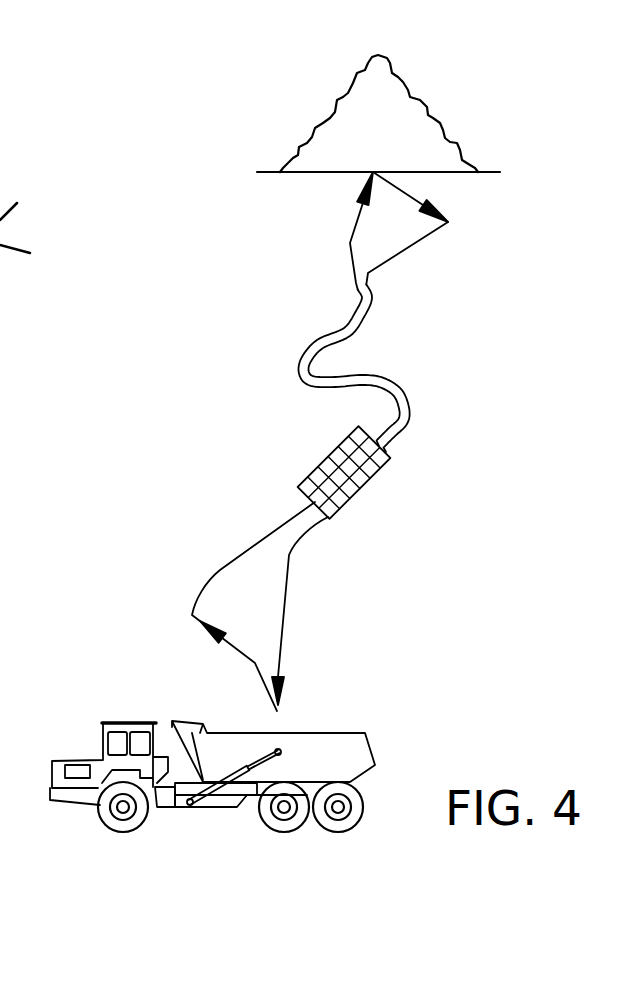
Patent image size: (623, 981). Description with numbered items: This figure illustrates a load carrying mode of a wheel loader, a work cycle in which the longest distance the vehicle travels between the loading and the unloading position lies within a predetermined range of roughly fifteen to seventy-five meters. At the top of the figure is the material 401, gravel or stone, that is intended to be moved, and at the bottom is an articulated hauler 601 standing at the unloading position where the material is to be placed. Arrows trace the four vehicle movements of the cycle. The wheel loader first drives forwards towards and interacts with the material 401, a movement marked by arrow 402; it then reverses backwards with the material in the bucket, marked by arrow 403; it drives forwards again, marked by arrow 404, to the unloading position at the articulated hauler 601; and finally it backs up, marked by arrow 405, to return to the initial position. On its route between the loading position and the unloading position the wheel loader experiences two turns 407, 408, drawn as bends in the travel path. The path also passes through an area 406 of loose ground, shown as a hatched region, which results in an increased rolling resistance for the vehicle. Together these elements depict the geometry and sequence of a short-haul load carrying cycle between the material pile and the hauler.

The material 401 is at (412, 110).
The forward movement towards the material 402 is at (356, 293).
The backward movement with material in the bucket 403 is at (413, 203).
The forward movement to the unloading position 404 is at (372, 294).
The backward movement to the initial position 405 is at (263, 690).
The area of loose ground 406 is at (361, 483).
The first turn 407 is at (299, 374).
The second turn 408 is at (411, 412).
The articulated hauler 601 is at (330, 750).